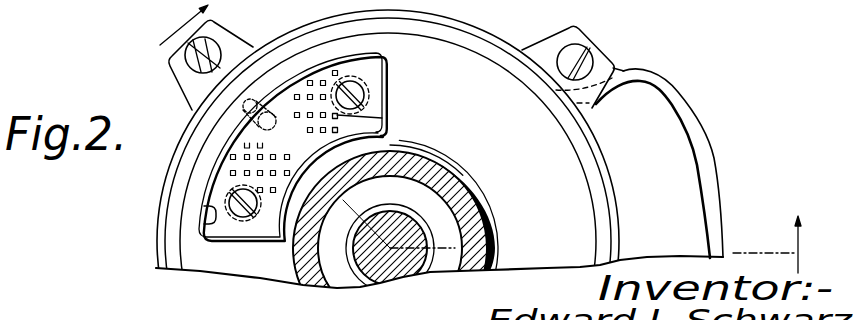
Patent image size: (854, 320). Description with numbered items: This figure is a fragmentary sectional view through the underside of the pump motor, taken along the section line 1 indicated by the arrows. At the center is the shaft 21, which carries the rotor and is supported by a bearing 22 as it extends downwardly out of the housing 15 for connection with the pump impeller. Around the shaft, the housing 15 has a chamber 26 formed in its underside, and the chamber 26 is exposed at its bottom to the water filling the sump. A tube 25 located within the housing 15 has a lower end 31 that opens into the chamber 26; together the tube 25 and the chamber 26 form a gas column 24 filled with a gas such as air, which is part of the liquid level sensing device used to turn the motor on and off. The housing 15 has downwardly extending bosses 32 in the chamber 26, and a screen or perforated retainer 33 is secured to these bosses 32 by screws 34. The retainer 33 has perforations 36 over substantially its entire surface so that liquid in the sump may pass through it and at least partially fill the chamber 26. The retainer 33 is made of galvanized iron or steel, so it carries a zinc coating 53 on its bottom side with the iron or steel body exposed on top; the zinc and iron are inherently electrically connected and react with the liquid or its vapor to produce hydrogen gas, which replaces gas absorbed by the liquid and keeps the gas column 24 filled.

The section line 1- 1 is at (484, 136).
The housing 15 is at (173, 215).
The shaft 21 is at (387, 262).
The bearing 22 is at (427, 252).
The gas column 24 is at (150, 193).
The tube 25 is at (247, 107).
The chamber 26 is at (212, 216).
The lower end 31 is at (274, 112).
The bosses 32 is at (370, 93).
The retainer 33 is at (325, 72).
The screws 34 is at (362, 92).
The perforations 36 is at (338, 130).
The zinc coating 53 is at (284, 132).